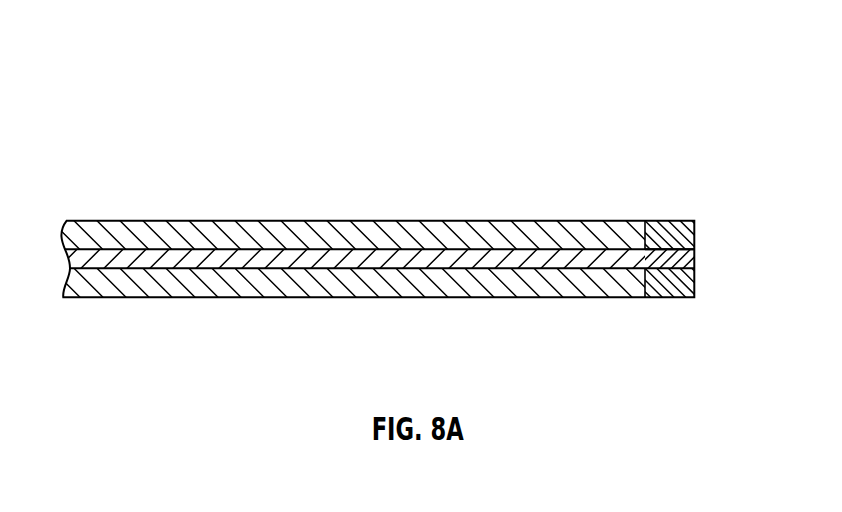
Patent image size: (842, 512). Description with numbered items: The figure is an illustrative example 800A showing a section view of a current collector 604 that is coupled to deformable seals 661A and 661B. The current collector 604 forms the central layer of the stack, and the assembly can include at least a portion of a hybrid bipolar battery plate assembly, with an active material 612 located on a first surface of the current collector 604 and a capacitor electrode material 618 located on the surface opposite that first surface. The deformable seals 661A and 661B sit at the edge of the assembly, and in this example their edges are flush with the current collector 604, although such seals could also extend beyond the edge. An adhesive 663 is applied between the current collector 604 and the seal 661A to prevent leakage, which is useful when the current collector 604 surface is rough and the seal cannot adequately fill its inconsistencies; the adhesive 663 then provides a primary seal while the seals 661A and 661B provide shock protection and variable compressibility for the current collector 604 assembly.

The illustrative example 800A is at (121, 141).
The capacitor electrode material 618 is at (373, 227).
The active material 612 is at (373, 288).
The current collector 604 is at (688, 260).
The deformable seal 661A is at (668, 228).
The deformable seal 661B is at (662, 288).
The adhesive 663 is at (663, 247).